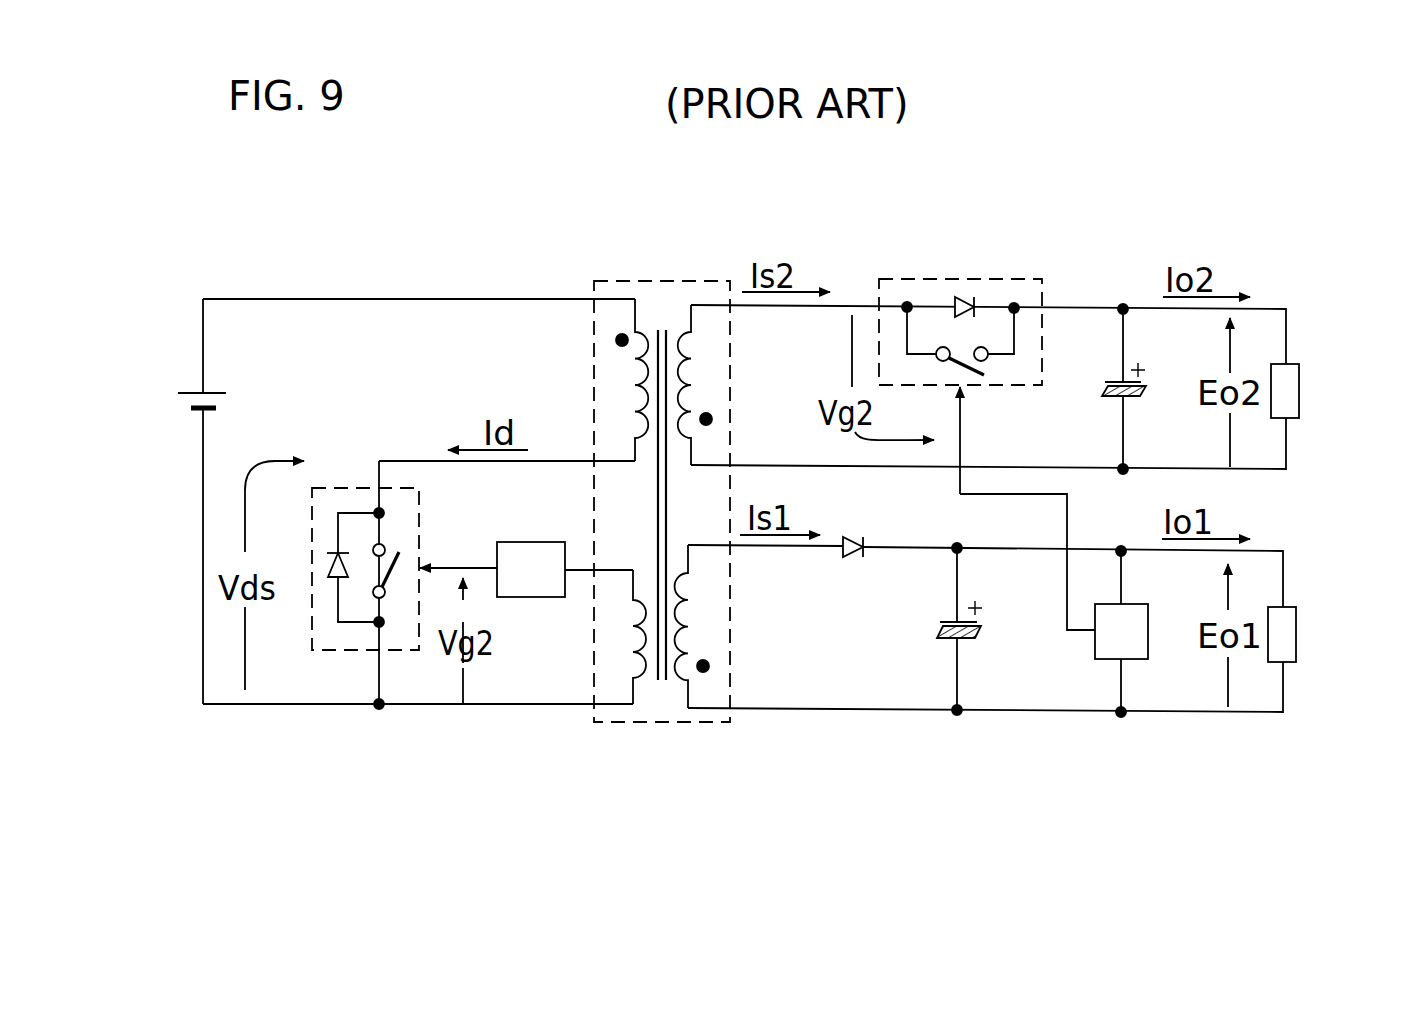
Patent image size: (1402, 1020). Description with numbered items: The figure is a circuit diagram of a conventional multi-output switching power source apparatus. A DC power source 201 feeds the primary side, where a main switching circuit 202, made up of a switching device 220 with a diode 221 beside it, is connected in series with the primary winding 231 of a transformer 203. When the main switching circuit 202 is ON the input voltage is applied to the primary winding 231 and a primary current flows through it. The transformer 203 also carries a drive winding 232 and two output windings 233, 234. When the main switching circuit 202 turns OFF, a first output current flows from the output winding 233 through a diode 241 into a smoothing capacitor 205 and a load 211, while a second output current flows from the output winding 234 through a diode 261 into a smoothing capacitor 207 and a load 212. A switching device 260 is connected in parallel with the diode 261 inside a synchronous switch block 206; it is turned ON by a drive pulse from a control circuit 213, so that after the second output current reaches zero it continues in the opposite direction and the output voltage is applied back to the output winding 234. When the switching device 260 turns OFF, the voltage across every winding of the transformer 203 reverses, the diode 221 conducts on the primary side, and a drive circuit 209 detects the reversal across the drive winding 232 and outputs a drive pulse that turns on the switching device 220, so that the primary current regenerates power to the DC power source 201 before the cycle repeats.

The DC power source 201 is at (190, 393).
The main switching circuit 202 is at (339, 584).
The transformer 203 is at (664, 493).
The smoothing capacitor 205 is at (940, 623).
The synchronous switch element 206 is at (954, 342).
The smoothing capacitor 207 is at (1110, 377).
The drive circuit 209 is at (527, 542).
The load 211 is at (1296, 632).
The load 212 is at (1299, 392).
The control circuit 213 is at (1105, 660).
The switching device 220 is at (399, 577).
The diode 221 is at (337, 578).
The primary winding 231 is at (632, 390).
The drive winding 232 is at (625, 667).
The output winding 233 is at (700, 632).
The output winding 234 is at (697, 390).
The diode 241 is at (853, 556).
The switching device 260 is at (957, 350).
The diode 261 is at (962, 296).